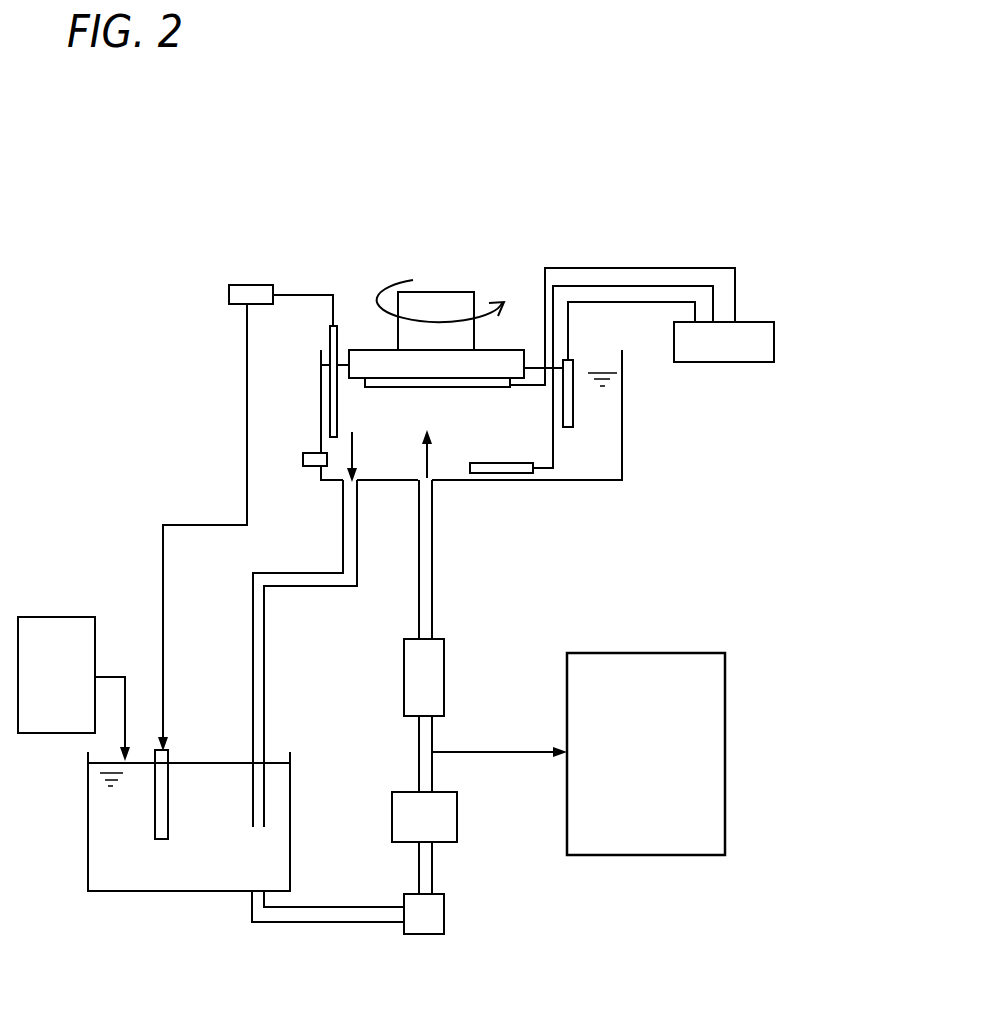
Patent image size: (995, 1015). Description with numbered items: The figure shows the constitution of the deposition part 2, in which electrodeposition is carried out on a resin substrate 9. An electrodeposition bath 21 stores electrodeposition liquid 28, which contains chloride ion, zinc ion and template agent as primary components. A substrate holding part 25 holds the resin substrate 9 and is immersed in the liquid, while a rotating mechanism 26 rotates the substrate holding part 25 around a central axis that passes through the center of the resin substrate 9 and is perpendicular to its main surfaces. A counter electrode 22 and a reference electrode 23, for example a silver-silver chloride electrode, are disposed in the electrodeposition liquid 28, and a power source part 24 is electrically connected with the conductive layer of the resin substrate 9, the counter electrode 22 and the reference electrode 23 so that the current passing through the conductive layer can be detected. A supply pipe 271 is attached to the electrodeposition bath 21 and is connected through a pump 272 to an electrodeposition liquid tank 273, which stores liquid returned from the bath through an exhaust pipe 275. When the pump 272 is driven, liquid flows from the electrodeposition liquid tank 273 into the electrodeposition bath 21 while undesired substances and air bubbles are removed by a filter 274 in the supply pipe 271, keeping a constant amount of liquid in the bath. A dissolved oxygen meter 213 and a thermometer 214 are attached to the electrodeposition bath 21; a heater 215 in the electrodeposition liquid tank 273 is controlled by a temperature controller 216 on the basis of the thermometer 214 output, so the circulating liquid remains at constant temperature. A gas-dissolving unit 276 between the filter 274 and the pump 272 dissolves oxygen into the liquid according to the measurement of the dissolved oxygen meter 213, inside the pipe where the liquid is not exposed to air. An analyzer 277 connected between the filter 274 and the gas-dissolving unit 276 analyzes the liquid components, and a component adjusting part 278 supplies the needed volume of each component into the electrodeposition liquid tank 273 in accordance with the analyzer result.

The deposition part 2 is at (289, 156).
The resin substrate 9 is at (442, 388).
The electrodeposition bath 21 is at (577, 481).
The counter electrode 22 is at (500, 474).
The reference electrode 23 is at (575, 393).
The power source part 24 is at (720, 362).
The substrate holding part 25 is at (505, 365).
The rotating mechanism 26 is at (438, 292).
The electrodeposition liquid 28 is at (602, 470).
The dissolved oxygen meter 213 is at (313, 467).
The thermometer 214 is at (329, 392).
The heater 215 is at (169, 793).
The temperature controller 216 is at (252, 285).
The supply pipe 271 is at (433, 575).
The pump 272 is at (445, 917).
The electrodeposition liquid tank 273 is at (182, 891).
The filter 274 is at (445, 672).
The exhaust pipe 275 is at (310, 588).
The gas-dissolving unit 276 is at (443, 843).
The analyzer 277 is at (647, 653).
The component adjusting part 278 is at (55, 617).